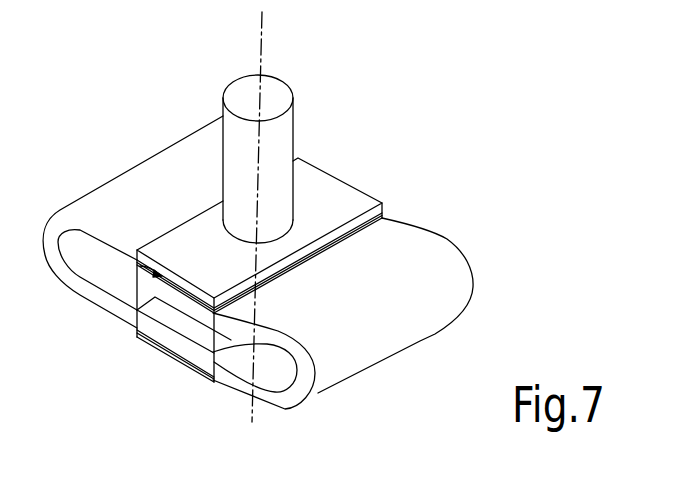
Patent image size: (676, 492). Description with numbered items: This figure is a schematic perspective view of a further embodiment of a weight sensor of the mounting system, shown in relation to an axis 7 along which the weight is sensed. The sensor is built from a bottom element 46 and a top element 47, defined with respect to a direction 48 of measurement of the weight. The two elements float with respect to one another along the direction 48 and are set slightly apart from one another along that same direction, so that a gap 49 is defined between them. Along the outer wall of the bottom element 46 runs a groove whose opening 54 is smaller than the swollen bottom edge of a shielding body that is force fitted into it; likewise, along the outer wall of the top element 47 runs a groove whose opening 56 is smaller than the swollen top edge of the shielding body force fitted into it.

The pin 7 is at (287, 146).
The bottom element 46 is at (152, 346).
The top element 47 is at (340, 190).
The direction of measurement of the weight 48 is at (262, 58).
The gap 49 is at (108, 274).
The opening 54 is at (190, 365).
The opening 56 is at (135, 262).